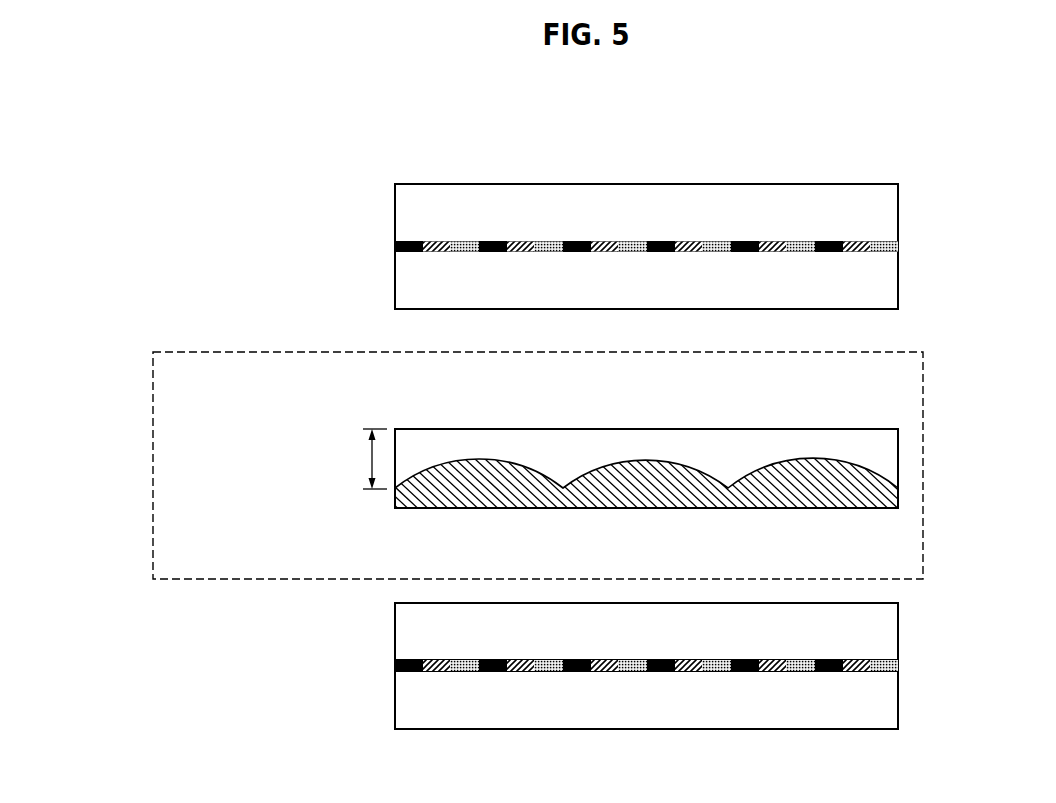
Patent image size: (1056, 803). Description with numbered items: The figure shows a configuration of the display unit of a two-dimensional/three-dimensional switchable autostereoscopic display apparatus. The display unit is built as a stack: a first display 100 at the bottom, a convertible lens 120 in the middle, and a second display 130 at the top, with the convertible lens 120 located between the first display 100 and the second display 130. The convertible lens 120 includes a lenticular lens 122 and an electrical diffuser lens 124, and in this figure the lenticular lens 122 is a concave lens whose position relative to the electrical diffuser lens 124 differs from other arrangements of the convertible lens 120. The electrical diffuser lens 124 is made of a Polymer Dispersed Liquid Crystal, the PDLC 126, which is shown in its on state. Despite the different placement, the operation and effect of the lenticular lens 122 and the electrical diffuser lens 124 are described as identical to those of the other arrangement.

The first display 100 is at (578, 666).
The convertible lens 120 is at (923, 464).
The lenticular lens 122 is at (570, 442).
The electrical diffuser lens 124 is at (536, 457).
The PDLC 126 is at (622, 492).
The second display 130 is at (576, 246).